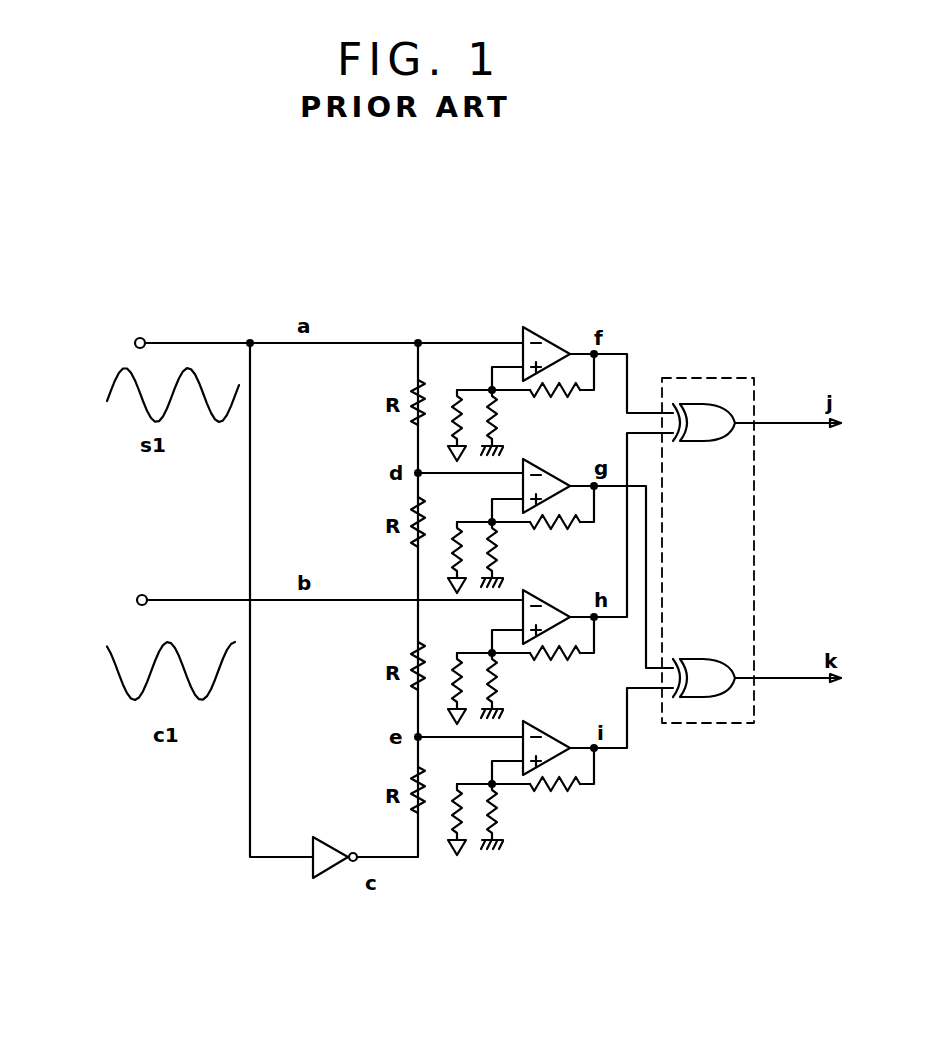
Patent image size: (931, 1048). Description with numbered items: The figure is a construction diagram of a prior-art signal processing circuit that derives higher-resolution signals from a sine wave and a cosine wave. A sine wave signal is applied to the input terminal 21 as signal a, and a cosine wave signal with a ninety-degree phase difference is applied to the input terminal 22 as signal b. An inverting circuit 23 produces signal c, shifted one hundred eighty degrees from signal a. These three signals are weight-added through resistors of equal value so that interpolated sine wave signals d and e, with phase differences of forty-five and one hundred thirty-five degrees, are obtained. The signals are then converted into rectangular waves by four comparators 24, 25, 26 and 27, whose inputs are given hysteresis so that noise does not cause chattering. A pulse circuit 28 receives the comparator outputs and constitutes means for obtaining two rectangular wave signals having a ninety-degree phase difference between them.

The input terminal 21 is at (136, 338).
The input terminal 22 is at (138, 595).
The inverting circuit 23 is at (327, 842).
The comparator 24 is at (547, 333).
The comparator 25 is at (547, 462).
The comparator 26 is at (545, 593).
The comparator 27 is at (547, 725).
The pulse circuit 28 is at (740, 417).